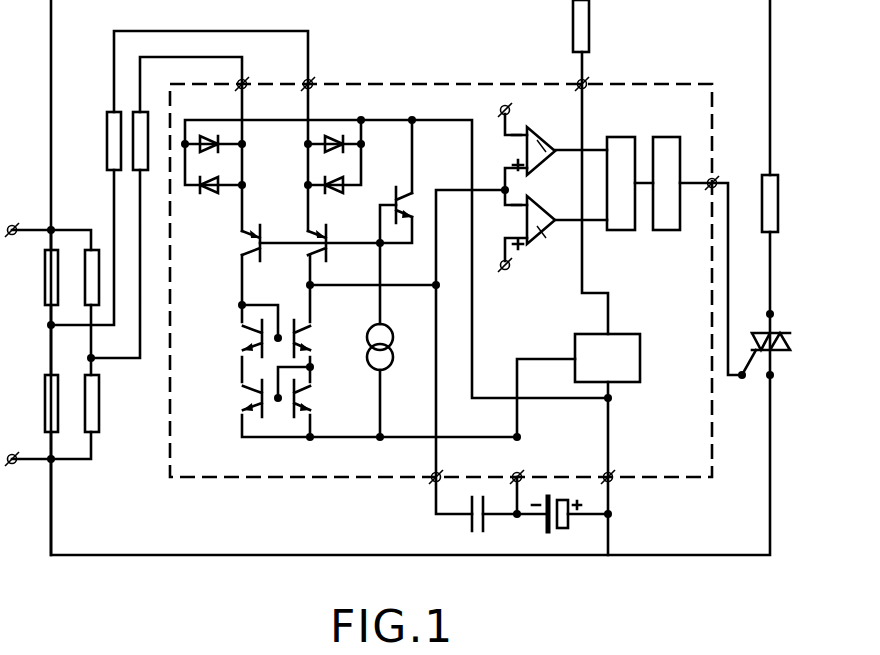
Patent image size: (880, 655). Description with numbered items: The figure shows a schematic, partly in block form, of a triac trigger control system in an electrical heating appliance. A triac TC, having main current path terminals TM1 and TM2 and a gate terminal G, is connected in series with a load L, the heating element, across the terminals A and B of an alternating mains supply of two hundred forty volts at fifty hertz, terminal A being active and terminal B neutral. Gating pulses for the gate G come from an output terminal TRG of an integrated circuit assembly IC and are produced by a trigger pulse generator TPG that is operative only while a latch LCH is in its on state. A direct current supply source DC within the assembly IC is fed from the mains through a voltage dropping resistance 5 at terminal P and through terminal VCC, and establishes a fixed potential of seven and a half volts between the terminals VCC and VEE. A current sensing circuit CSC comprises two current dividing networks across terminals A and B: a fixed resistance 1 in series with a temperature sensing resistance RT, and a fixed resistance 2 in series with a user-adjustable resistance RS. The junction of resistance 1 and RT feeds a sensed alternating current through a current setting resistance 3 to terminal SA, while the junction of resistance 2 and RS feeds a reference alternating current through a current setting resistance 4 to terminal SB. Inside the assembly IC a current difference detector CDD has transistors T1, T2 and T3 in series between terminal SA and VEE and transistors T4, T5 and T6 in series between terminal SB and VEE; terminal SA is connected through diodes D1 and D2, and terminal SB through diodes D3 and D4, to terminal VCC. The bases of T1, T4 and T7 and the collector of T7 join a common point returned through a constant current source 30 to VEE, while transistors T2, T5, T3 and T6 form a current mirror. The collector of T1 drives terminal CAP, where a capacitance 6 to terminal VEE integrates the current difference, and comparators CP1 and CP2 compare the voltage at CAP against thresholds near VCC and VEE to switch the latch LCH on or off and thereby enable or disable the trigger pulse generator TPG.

The fixed resistance 1 is at (45, 288).
The fixed resistance 2 is at (85, 288).
The current setting resistance 3 is at (107, 118).
The current setting resistance 4 is at (148, 118).
The voltage dropping resistance 5 is at (589, 34).
The capacitance 6 is at (470, 526).
The constant current source 30 is at (391, 330).
The temperature sensing resistance RT is at (45, 398).
The adjustable resistance RS is at (99, 398).
The current sensing circuit CSC is at (105, 197).
The current difference detection means CDD is at (302, 291).
The integrated circuit assembly IC is at (400, 82).
The terminal SA is at (313, 80).
The terminal SB is at (252, 74).
The diode D1 is at (348, 140).
The diode D2 is at (344, 190).
The diode D3 is at (225, 140).
The diode D4 is at (216, 190).
The transistor T1 is at (318, 236).
The transistor T2 is at (306, 338).
The transistor T3 is at (306, 398).
The transistor T4 is at (252, 248).
The transistor T5 is at (250, 338).
The transistor T6 is at (250, 398).
The transistor T7 is at (410, 196).
The voltage comparator CP1 is at (541, 137).
The voltage comparator CP2 is at (541, 240).
The latch LCH is at (620, 144).
The trigger pulse generator TPG is at (667, 144).
The trigger output terminal TRG is at (716, 180).
The direct current supply source DC is at (607, 358).
The terminal P is at (588, 80).
The load L is at (780, 203).
The triac device TC is at (773, 333).
The main current path terminal TM1 is at (774, 377).
The main current path terminal TM2 is at (766, 315).
The gate terminal G is at (744, 378).
The terminal CAP is at (433, 472).
The terminal VEE is at (522, 472).
The terminal VCC is at (613, 472).
The terminal A is at (11, 208).
The terminal B is at (11, 487).